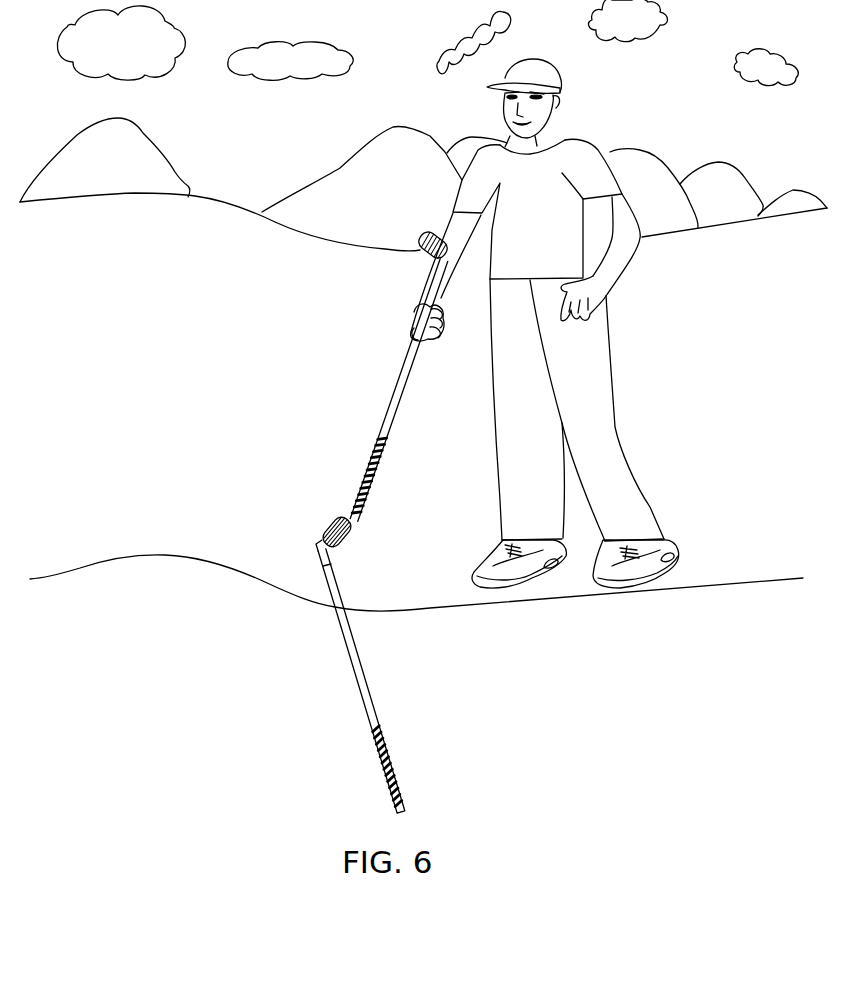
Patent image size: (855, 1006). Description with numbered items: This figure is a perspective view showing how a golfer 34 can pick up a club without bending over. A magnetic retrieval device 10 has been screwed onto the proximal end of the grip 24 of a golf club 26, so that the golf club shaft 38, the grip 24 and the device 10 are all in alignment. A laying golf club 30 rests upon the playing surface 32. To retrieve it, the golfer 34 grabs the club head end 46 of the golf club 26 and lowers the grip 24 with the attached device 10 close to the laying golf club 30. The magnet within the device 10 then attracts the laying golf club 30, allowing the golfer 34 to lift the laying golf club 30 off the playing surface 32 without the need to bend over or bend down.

The magnetic retrieval device 10 is at (372, 502).
The grip 24 is at (370, 472).
The golf club 26 is at (400, 390).
The laying golf club 30 is at (360, 667).
The playing surface 32 is at (280, 603).
The golfer 34 is at (607, 345).
The golf club shaft 38 is at (395, 425).
The club head end 46 is at (425, 230).